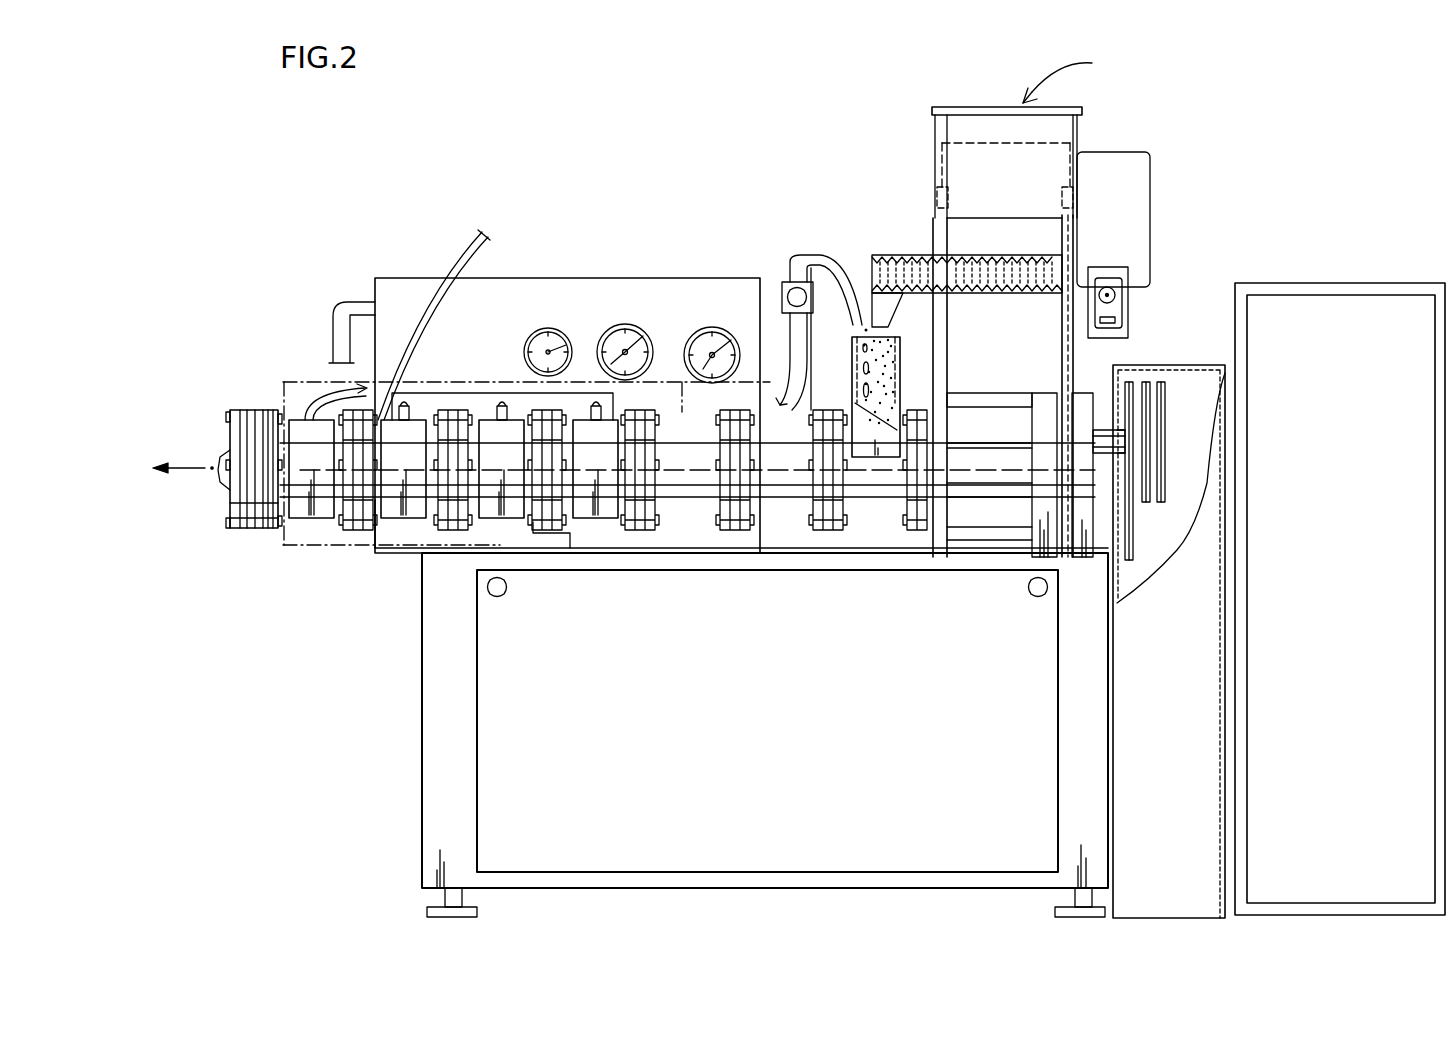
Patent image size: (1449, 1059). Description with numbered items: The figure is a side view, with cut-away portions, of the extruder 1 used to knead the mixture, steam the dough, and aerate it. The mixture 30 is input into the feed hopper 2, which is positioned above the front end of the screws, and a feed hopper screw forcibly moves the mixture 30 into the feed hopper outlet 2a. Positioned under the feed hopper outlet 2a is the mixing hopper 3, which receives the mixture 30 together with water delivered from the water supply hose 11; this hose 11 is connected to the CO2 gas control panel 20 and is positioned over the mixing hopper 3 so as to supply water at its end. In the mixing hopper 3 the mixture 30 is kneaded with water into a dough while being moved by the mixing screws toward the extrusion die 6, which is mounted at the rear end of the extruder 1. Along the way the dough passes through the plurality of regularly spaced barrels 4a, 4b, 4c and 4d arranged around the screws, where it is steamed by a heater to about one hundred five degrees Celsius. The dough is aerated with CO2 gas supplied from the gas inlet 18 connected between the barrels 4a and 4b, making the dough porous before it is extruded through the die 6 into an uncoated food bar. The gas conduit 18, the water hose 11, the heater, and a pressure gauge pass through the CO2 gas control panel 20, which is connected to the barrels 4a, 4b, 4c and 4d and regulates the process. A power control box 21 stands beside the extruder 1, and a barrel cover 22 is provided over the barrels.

The extruder 1 is at (372, 655).
The feed hopper 2 is at (1083, 139).
The feed hopper outlet 2a is at (878, 310).
The mixing hopper 3 is at (853, 353).
The barrel 4a is at (303, 503).
The barrel 4b is at (392, 503).
The barrel 4c is at (513, 503).
The barrel 4d is at (605, 503).
The extrusion die 6 is at (218, 473).
The water supply hose 11 is at (843, 285).
The gas inlet 18 is at (440, 262).
The CO2 gas control panel 20 is at (578, 290).
The power control box 21 is at (1323, 318).
The barrel cover 22 is at (290, 372).
The mixture 30 is at (885, 342).